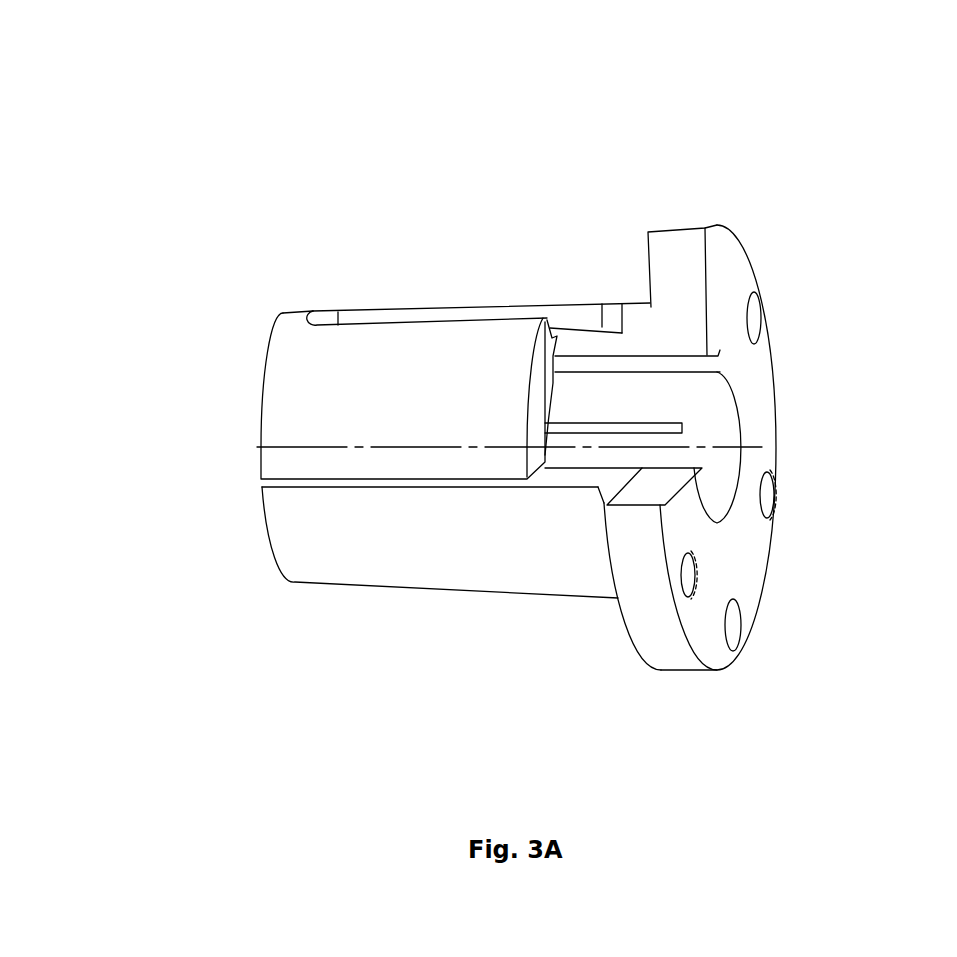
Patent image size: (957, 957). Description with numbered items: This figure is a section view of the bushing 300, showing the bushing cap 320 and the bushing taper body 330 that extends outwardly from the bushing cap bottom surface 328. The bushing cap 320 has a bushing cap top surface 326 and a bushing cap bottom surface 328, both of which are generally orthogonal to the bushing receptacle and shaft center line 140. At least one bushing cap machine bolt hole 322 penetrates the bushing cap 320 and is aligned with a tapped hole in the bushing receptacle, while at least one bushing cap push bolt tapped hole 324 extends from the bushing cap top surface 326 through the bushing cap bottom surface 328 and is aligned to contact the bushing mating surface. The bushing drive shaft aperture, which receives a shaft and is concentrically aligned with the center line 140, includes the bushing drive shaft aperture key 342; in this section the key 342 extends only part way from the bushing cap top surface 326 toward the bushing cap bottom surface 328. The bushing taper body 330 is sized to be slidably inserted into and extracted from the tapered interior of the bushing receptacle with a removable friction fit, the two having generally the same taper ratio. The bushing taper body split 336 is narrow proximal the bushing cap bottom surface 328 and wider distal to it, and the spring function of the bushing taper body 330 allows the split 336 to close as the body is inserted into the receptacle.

The bushing 300 is at (715, 193).
The bushing cap 320 is at (733, 262).
The bushing cap machine bolt hole 322 is at (803, 469).
The bushing cap push bolt tapped hole 324 is at (812, 521).
The bushing cap top surface 326 is at (633, 633).
The bushing cap bottom surface 328 is at (617, 253).
The bushing taper body 330 is at (409, 568).
The bushing taper body split 336 is at (464, 499).
The bushing drive shaft aperture key 342 is at (736, 336).
The bushing receptacle and shaft center line 140 is at (522, 450).